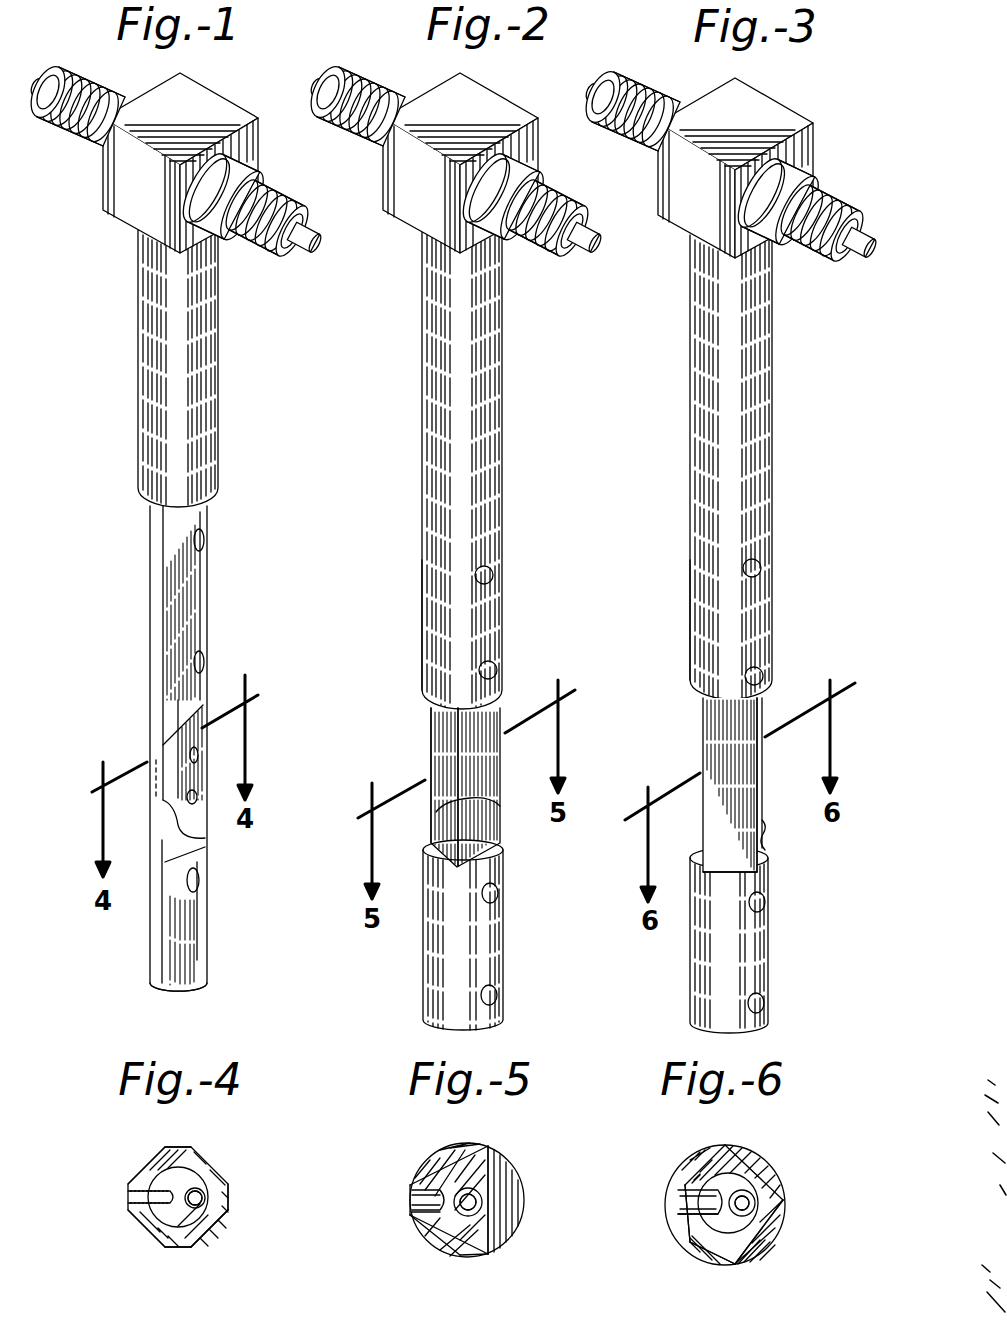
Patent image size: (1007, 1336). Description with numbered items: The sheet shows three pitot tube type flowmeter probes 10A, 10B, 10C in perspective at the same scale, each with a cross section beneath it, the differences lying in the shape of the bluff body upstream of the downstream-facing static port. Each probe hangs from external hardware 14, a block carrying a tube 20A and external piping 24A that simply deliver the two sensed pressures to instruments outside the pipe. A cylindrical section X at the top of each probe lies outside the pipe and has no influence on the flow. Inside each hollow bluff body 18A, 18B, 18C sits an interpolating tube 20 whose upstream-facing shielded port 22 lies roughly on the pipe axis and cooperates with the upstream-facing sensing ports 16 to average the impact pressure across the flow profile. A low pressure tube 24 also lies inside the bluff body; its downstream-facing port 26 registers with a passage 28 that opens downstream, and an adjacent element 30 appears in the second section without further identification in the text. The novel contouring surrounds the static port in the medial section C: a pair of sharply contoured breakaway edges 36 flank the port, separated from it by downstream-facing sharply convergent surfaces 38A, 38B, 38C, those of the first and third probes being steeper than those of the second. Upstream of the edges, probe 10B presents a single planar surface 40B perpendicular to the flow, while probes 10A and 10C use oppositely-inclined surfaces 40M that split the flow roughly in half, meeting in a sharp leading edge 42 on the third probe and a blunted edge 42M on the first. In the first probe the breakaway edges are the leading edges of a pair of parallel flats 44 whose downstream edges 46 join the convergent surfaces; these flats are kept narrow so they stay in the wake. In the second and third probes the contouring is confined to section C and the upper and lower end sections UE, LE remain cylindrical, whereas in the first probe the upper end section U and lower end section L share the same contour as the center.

In FIG. 1, the probe 10A is at (225, 592).
In FIG. 4, the probe 10A is at (208, 1152).
In FIG. 2, the probe 10B is at (510, 550).
In FIG. 5, the probe 10B is at (497, 1145).
In FIG. 3, the probe 10C is at (782, 516).
In FIG. 6, the probe 10C is at (787, 1148).
In FIG. 1, the external hardware 14 is at (222, 82).
In FIG. 2, the external hardware 14 is at (510, 84).
In FIG. 3, the external hardware 14 is at (787, 96).
In FIG. 1, the upstream-facing sensing ports 16 is at (207, 672).
In FIG. 2, the upstream-facing sensing ports 16 is at (502, 592).
In FIG. 3, the upstream-facing sensing ports 16 is at (766, 684).
In FIG. 1, the bluff body 18A is at (172, 600).
In FIG. 4, the bluff body 18A is at (160, 1244).
In FIG. 2, the bluff body 18B is at (440, 668).
In FIG. 5, the bluff body 18B is at (455, 1257).
In FIG. 3, the bluff body 18C is at (702, 640).
In FIG. 6, the bluff body 18C is at (718, 1266).
In FIG. 1, the interpolating tube 20 is at (200, 542).
In FIG. 2, the interpolating tube 20 is at (490, 580).
In FIG. 3, the interpolating tube 20 is at (762, 569).
In FIG. 4, the interpolating tube 20 is at (202, 1180).
In FIG. 5, the interpolating tube 20 is at (484, 1188).
In FIG. 6, the interpolating tube 20 is at (765, 1182).
In FIG. 1, the tube 20A is at (308, 248).
In FIG. 2, the tube 20A is at (580, 250).
In FIG. 3, the tube 20A is at (874, 250).
In FIG. 1, the upstream-facing shielded port 22 is at (196, 798).
In FIG. 4, the upstream-facing shielded port 22 is at (218, 1190).
In FIG. 5, the upstream-facing shielded port 22 is at (488, 1200).
In FIG. 6, the upstream-facing shielded port 22 is at (765, 1200).
In FIG. 1, the low pressure tube 24 is at (170, 742).
In FIG. 4, the low pressure tube 24 is at (150, 1182).
In FIG. 5, the low pressure tube 24 is at (432, 1186).
In FIG. 6, the low pressure tube 24 is at (692, 1182).
In FIG. 1, the external piping 24A is at (45, 78).
In FIG. 2, the external piping 24A is at (325, 76).
In FIG. 3, the external piping 24A is at (600, 86).
In FIG. 1, the downstream-facing port 26 is at (153, 812).
In FIG. 4, the downstream-facing port 26 is at (136, 1200).
In FIG. 5, the downstream-facing port 26 is at (420, 1212).
In FIG. 6, the downstream-facing port 26 is at (686, 1230).
In FIG. 1, the passage 28 is at (160, 785).
In FIG. 4, the passage 28 is at (130, 1196).
In FIG. 6, the passage 28 is at (680, 1208).
In FIG. 5, the slot 30 is at (414, 1200).
In FIG. 1, the sharply contoured breakaway edges 36 is at (197, 855).
In FIG. 2, the sharply contoured breakaway edges 36 is at (462, 800).
In FIG. 3, the sharply contoured breakaway edges 36 is at (705, 815).
In FIG. 4, the sharply contoured breakaway edges 36 is at (192, 1250).
In FIG. 5, the sharply contoured breakaway edges 36 is at (494, 1257).
In FIG. 6, the sharply contoured breakaway edges 36 is at (736, 1268).
In FIG. 4, the downstream-facing sharply convergent surfaces 38A is at (138, 1220).
In FIG. 2, the downstream-facing sharply convergent surfaces 38B is at (435, 822).
In FIG. 5, the downstream-facing sharply convergent surfaces 38B is at (426, 1240).
In FIG. 6, the downstream-facing sharply convergent surfaces 38C is at (682, 1250).
In FIG. 1, the oppositely-inclined surfaces 40M is at (193, 618).
In FIG. 3, the oppositely-inclined surfaces 40M is at (768, 778).
In FIG. 4, the oppositely-inclined surfaces 40M is at (232, 1222).
In FIG. 6, the oppositely-inclined surfaces 40M is at (786, 1240).
In FIG. 2, the planar surface 40B is at (494, 752).
In FIG. 5, the planar surface 40B is at (512, 1236).
In FIG. 3, the sharp leading edge 42 is at (770, 828).
In FIG. 1, the blunted edge 42M is at (207, 930).
In FIG. 4, the blunted edge 42M is at (230, 1196).
In FIG. 1, the flats 44 is at (160, 896).
In FIG. 4, the flats 44 is at (172, 1147).
In FIG. 1, the downstream edges 46 is at (152, 968).
In FIG. 4, the downstream edges 46 is at (172, 1250).
In FIG. 1, the cylindrical section X is at (230, 374).
In FIG. 2, the cylindrical section X is at (405, 300).
In FIG. 3, the cylindrical section X is at (680, 300).
In FIG. 1, the upper end section U is at (142, 520).
In FIG. 1, the lower end section L is at (142, 950).
In FIG. 2, the upper end section UE is at (420, 604).
In FIG. 3, the upper end section UE is at (688, 586).
In FIG. 2, the lower end section LE is at (420, 976).
In FIG. 3, the lower end section LE is at (690, 990).
In FIG. 1, the medial section C is at (118, 746).
In FIG. 2, the medial section C is at (422, 742).
In FIG. 3, the medial section C is at (690, 736).